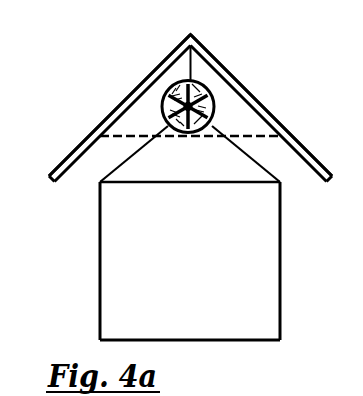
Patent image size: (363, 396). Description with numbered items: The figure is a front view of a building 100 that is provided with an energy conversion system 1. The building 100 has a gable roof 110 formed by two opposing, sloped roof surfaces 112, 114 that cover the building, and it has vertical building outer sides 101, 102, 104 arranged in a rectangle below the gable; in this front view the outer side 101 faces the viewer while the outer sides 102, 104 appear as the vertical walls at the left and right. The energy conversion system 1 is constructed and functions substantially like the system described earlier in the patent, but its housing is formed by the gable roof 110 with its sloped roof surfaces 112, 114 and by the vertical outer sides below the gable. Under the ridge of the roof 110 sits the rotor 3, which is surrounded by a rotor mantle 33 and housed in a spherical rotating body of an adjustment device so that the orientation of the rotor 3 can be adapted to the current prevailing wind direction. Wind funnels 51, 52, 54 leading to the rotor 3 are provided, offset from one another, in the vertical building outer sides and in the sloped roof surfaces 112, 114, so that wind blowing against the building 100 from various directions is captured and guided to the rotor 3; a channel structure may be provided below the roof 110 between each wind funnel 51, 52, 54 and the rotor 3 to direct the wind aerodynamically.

The energy conversion system 1 is at (74, 48).
The rotor 3 is at (199, 76).
The rotor mantle 33 is at (215, 87).
The wind funnel 51 is at (226, 128).
The wind funnel 52 is at (108, 102).
The wind funnel 54 is at (276, 105).
The building 100 is at (66, 257).
The vertical building outer side 101 is at (174, 268).
The vertical building outer side 102 is at (96, 228).
The vertical building outer side 104 is at (290, 296).
The gable roof 110 is at (103, 71).
The sloped roof surface 112 is at (60, 155).
The sloped roof surface 114 is at (338, 131).